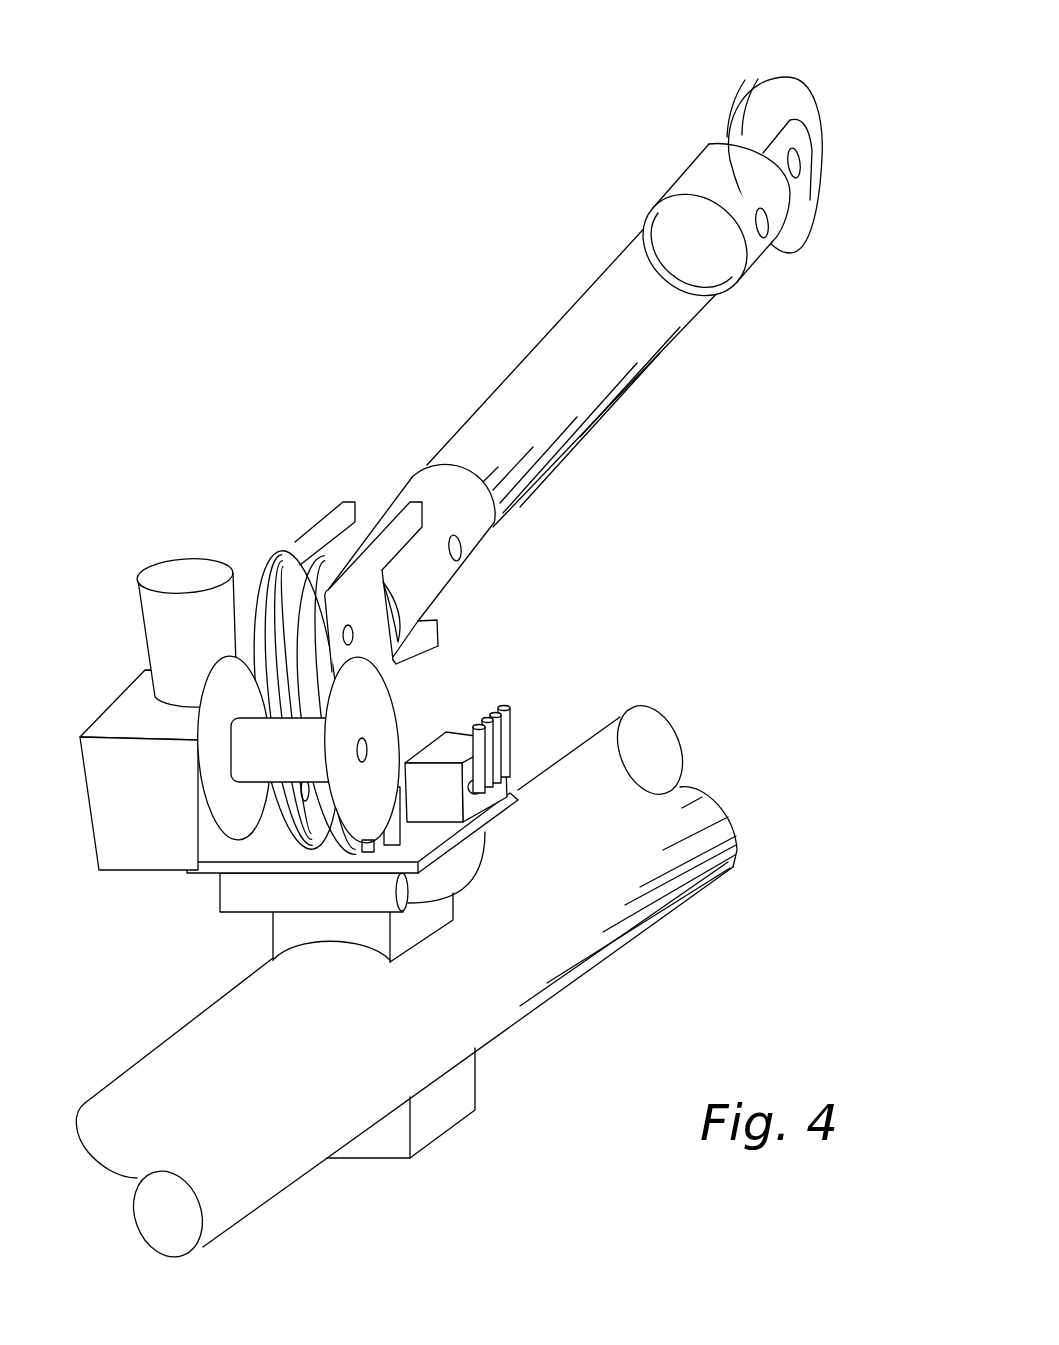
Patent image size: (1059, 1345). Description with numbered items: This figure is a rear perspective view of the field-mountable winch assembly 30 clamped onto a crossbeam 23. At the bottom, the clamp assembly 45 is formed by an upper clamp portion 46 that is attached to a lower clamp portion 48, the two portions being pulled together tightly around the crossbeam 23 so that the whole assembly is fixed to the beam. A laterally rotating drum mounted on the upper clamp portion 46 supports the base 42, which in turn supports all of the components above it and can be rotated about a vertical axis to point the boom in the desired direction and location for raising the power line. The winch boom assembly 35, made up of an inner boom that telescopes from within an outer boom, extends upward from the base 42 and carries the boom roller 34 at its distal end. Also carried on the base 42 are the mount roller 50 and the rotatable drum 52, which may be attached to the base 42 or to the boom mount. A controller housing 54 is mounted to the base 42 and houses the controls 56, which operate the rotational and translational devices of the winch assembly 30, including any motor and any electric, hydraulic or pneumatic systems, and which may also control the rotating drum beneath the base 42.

The crossbeam 23 is at (115, 1098).
The field-mountable winch assembly 30 is at (578, 350).
The boom roller 34 is at (798, 100).
The winch boom assembly 35 is at (453, 360).
The base 42 is at (207, 877).
The clamp assembly 45 is at (398, 981).
The upper clamp portion 46 is at (277, 933).
The lower clamp portion 48 is at (392, 1148).
The mount roller 50 is at (290, 567).
The drum 52 is at (385, 724).
The controller housing 54 is at (450, 730).
The controls 56 is at (517, 745).